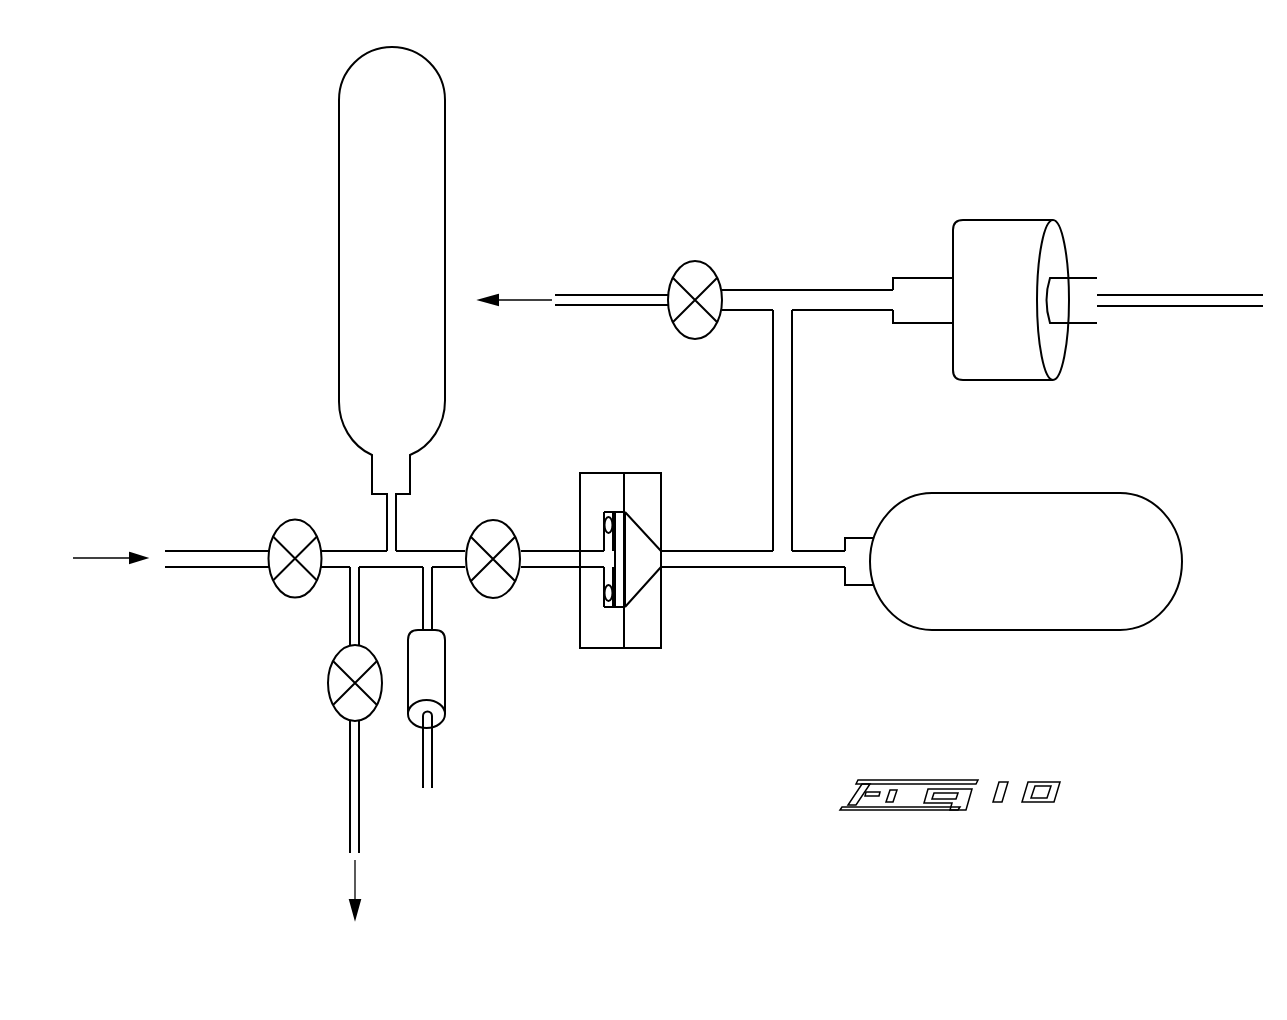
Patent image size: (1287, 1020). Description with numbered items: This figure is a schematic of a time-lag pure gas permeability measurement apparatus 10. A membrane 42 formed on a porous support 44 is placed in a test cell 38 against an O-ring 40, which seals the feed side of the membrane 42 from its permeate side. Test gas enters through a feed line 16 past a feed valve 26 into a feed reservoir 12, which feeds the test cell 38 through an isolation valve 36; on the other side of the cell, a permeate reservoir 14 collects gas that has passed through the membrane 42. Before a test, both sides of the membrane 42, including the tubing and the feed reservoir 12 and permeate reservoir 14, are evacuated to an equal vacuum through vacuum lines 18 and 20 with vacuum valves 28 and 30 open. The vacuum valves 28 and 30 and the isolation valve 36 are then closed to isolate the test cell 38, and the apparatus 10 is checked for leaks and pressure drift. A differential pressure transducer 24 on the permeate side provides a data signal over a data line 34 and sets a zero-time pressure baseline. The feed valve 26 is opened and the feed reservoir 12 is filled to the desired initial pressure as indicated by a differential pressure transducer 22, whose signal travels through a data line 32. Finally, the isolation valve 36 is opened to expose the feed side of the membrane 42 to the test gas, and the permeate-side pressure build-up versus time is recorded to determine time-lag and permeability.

The measurement apparatus 10 is at (1165, 120).
The feed reservoir 12 is at (405, 222).
The permeate reservoir 14 is at (1035, 574).
The feed line 16 is at (222, 550).
The vacuum line 18 is at (348, 792).
The vacuum line 20 is at (615, 292).
The differential pressure transducer 22 is at (447, 670).
The differential pressure transducer 24 is at (1012, 380).
The feed valve 26 is at (297, 520).
The vacuum valve 28 is at (327, 687).
The vacuum valve 30 is at (700, 261).
The data line 32 is at (433, 753).
The data line 34 is at (1207, 295).
The isolation valve 36 is at (493, 520).
The test cell 38 is at (639, 480).
The O-ring 40 is at (604, 525).
The membrane 42 is at (604, 575).
The porous support 44 is at (630, 578).